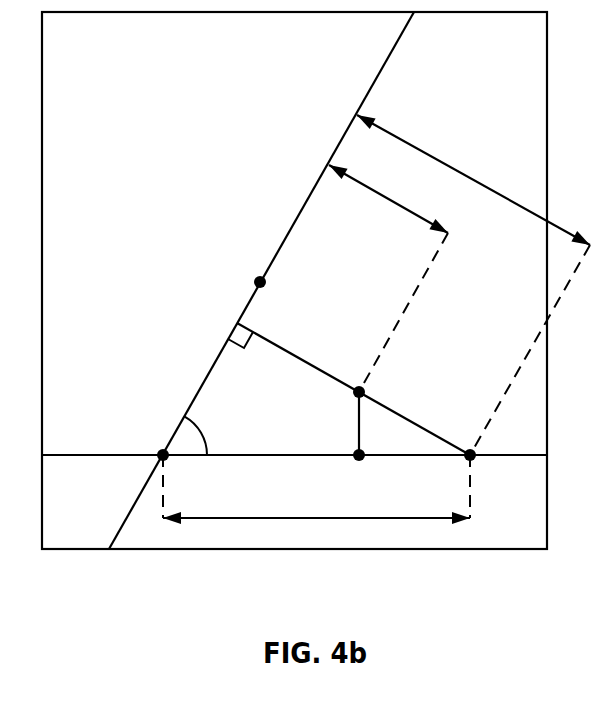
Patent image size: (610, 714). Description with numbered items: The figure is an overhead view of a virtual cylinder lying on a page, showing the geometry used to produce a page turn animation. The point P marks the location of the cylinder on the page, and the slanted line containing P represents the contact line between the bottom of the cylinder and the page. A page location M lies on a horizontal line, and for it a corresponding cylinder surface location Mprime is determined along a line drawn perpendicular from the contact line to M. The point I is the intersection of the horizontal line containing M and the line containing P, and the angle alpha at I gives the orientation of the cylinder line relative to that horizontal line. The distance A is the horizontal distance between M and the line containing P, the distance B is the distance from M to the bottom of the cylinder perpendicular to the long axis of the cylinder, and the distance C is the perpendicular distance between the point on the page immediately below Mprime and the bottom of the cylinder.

The point P is at (256, 276).
The point I is at (157, 449).
The cylinder surface location M' Mprime is at (363, 386).
The page location M is at (477, 447).
The distance A is at (316, 489).
The distance B is at (473, 285).
The distance C is at (388, 278).
The angle α alpha is at (193, 436).